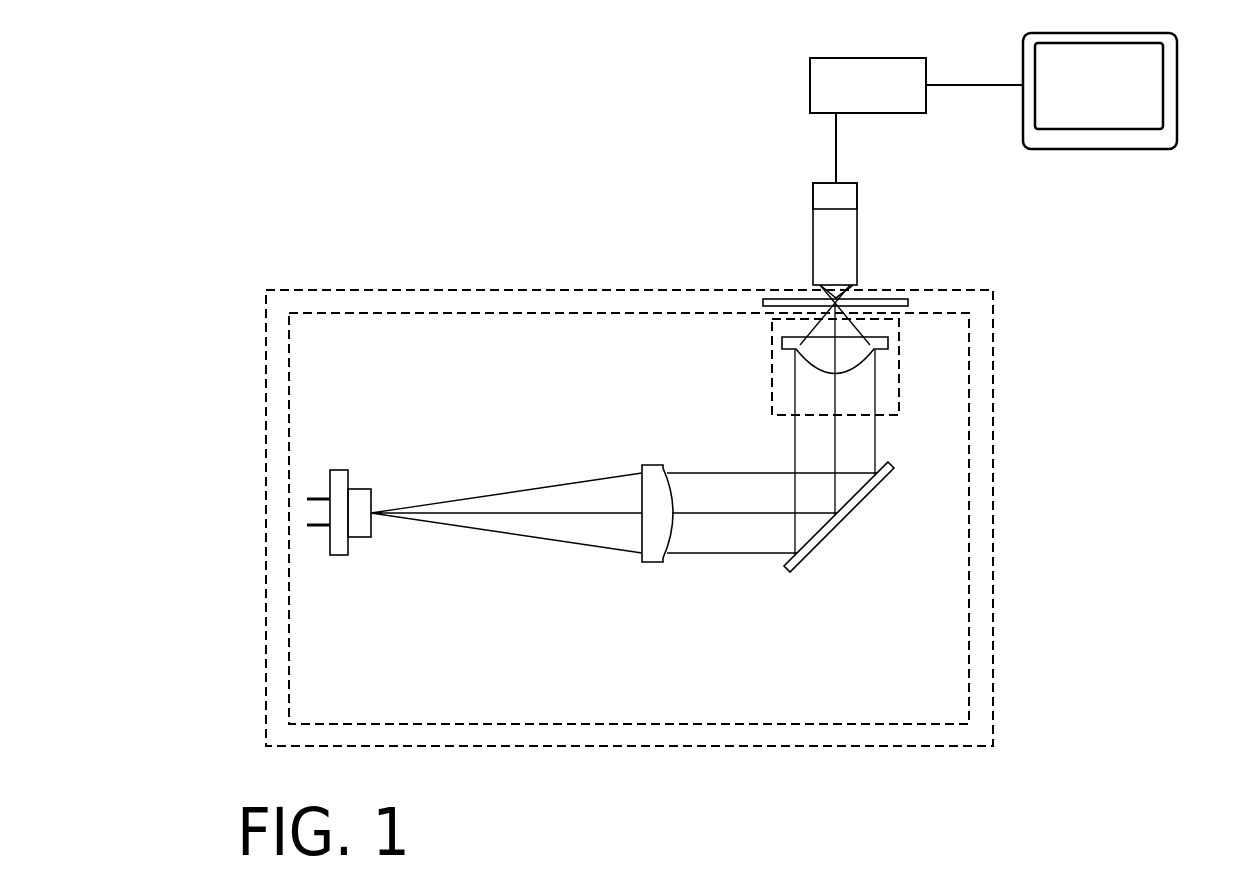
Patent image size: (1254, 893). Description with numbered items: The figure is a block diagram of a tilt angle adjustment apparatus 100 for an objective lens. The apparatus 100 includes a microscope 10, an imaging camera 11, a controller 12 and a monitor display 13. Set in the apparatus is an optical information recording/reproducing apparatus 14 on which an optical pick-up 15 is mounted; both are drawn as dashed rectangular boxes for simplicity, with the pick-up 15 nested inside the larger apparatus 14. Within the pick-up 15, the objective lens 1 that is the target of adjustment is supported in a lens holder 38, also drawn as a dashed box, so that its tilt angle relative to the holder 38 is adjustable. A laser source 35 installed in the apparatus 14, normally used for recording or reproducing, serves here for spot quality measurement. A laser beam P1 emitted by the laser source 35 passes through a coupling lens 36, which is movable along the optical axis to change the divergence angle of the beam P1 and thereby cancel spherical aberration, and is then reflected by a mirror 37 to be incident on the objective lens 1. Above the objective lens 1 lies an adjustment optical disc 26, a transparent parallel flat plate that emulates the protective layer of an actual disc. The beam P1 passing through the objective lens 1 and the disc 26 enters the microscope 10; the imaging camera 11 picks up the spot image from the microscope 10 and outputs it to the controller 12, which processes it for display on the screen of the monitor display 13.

The objective lens 1 is at (888, 343).
The microscope 10 is at (813, 251).
The imaging camera 11 is at (813, 196).
The controller 12 is at (810, 76).
The monitor display 13 is at (1177, 91).
The optical information recording/reproducing apparatus 14 is at (968, 290).
The optical pick-up 15 is at (968, 643).
The adjustment optical disc 26 is at (875, 296).
The laser source 35 is at (358, 488).
The coupling lens 36 is at (665, 465).
The mirror 37 is at (835, 525).
The lens holder 38 is at (772, 367).
The laser beam P1 is at (747, 515).
The tilt angle adjustment apparatus 100 is at (1040, 778).